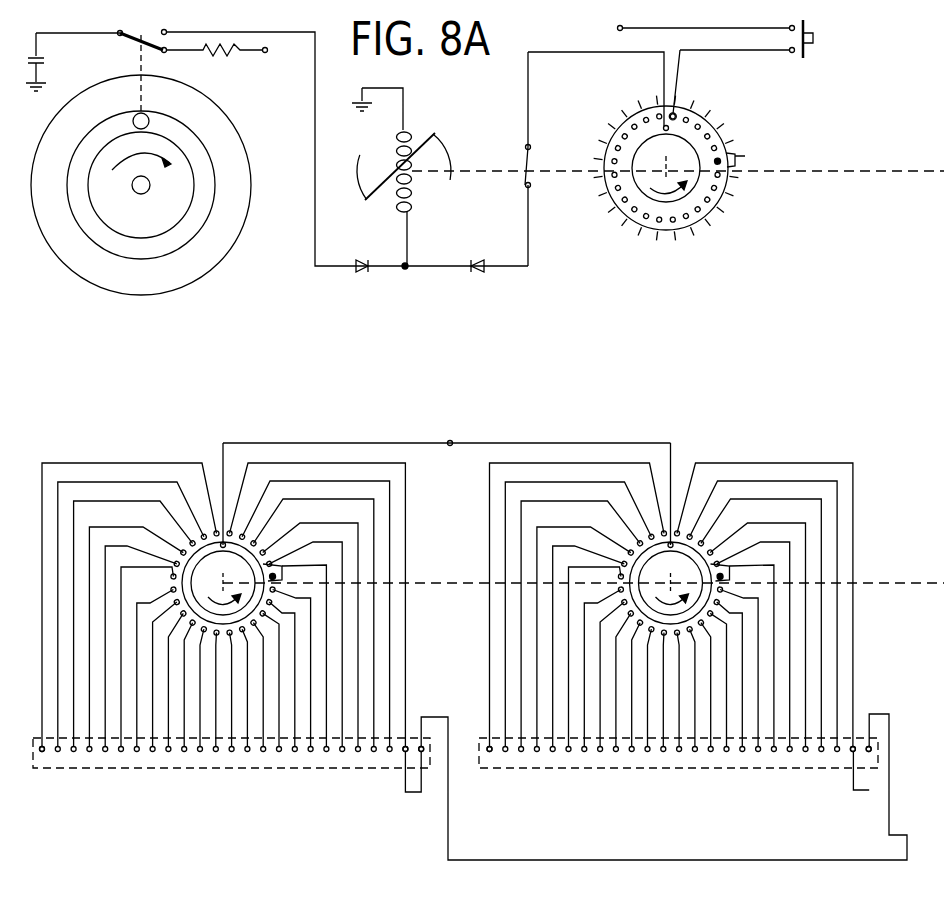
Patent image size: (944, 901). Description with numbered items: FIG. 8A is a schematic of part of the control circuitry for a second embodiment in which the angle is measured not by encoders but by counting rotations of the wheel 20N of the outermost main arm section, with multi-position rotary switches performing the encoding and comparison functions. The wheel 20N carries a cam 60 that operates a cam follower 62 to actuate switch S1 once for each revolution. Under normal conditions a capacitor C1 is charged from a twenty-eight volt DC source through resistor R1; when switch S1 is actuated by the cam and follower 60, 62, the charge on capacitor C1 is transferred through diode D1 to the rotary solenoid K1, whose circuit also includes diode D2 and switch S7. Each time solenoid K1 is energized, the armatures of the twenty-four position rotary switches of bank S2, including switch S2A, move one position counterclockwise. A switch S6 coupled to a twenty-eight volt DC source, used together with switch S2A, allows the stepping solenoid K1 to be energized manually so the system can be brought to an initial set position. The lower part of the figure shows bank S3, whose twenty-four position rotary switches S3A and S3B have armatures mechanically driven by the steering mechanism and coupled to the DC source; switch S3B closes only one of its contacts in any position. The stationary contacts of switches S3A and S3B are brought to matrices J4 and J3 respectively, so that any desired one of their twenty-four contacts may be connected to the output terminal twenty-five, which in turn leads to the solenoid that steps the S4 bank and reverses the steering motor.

The switch S1 is at (166, 31).
The capacitor C1 is at (48, 62).
The resistor R1 is at (214, 62).
The d.c. source DC is at (443, 232).
The wheel 20N is at (200, 259).
The cam 60 is at (128, 136).
The cam follower 62 is at (150, 120).
The rotary solenoid K1 is at (418, 133).
The diode D1 is at (362, 281).
The diode D2 is at (474, 281).
The switch S7 is at (522, 167).
The switch S6 is at (810, 37).
The twenty-four position rotary switch S2A is at (697, 231).
The bank of rotary switches S3 is at (530, 434).
The twenty-four position rotary switch S3A is at (113, 462).
The twenty-four position rotary switch S3B is at (727, 458).
The matrix J4 is at (85, 772).
The matrix J3 is at (530, 772).